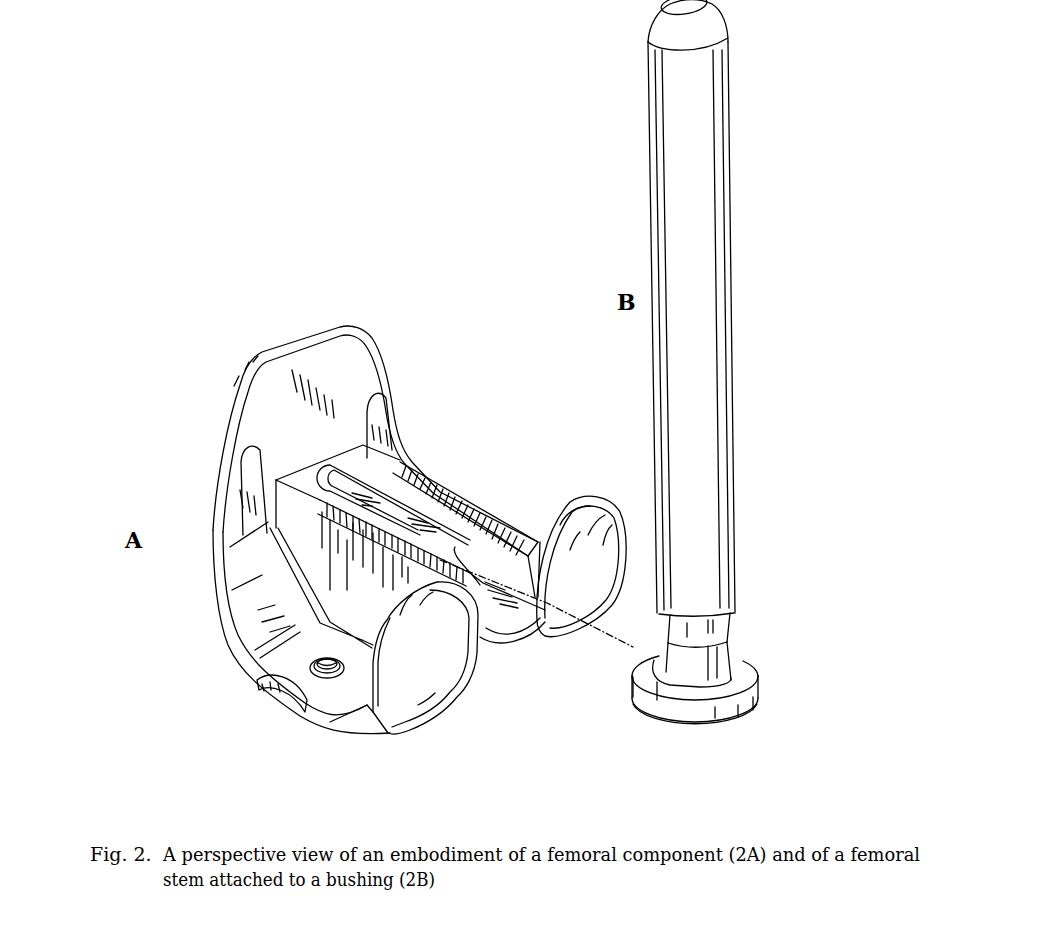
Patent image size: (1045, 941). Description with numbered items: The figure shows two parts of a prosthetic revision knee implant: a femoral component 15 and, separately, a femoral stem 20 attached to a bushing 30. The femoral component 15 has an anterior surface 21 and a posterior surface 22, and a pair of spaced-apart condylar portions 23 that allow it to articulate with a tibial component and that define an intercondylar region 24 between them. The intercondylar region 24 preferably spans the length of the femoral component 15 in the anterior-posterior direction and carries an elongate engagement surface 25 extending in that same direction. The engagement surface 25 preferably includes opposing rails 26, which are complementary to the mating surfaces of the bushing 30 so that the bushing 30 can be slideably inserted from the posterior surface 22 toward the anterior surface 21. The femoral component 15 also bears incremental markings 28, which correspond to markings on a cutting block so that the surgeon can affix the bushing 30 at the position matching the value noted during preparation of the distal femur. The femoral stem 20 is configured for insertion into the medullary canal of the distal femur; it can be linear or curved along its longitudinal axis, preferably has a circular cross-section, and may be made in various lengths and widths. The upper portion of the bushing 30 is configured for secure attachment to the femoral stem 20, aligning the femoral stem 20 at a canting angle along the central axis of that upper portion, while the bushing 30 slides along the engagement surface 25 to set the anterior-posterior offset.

In FIG. 2A, the femoral component 15 is at (345, 520).
In FIG. 2B, the femoral stem 20 is at (614, 190).
In FIG. 2A, the anterior surface 21 is at (315, 360).
In FIG. 2A, the posterior surface 22 is at (483, 583).
In FIG. 2A, the condylar portions 23 is at (598, 520).
In FIG. 2A, the intercondylar region 24 is at (480, 637).
In FIG. 2A, the engagement surface 25 is at (320, 517).
In FIG. 2A, the opposing rails 26 is at (448, 488).
In FIG. 2A, the incremental markings 28 is at (400, 553).
In FIG. 2B, the bushing 30 is at (632, 725).